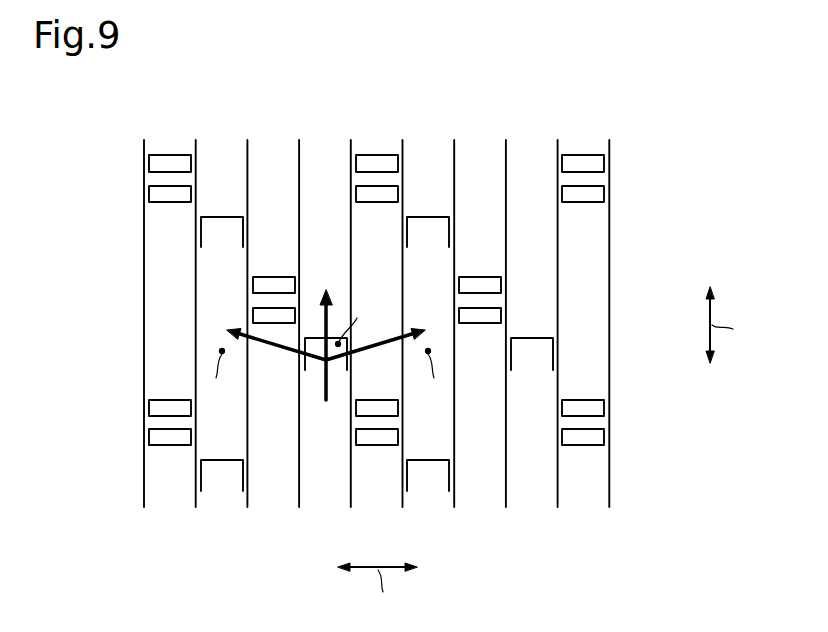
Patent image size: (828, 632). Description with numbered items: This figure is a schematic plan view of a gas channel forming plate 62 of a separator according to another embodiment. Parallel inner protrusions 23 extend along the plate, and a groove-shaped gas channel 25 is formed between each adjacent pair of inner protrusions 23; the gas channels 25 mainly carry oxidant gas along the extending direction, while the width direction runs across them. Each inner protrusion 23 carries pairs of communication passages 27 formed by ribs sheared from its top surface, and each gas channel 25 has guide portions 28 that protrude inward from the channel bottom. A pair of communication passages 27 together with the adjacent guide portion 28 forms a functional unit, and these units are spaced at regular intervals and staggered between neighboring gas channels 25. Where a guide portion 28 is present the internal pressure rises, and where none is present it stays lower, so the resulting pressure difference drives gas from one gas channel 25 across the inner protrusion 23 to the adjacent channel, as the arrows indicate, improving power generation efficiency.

The inner protrusion 23 is at (581, 143).
The gas channel 25 is at (530, 143).
The communication passage 27 is at (163, 155).
The guide portion 28 is at (208, 231).
The gas channel forming plate 62 is at (658, 117).